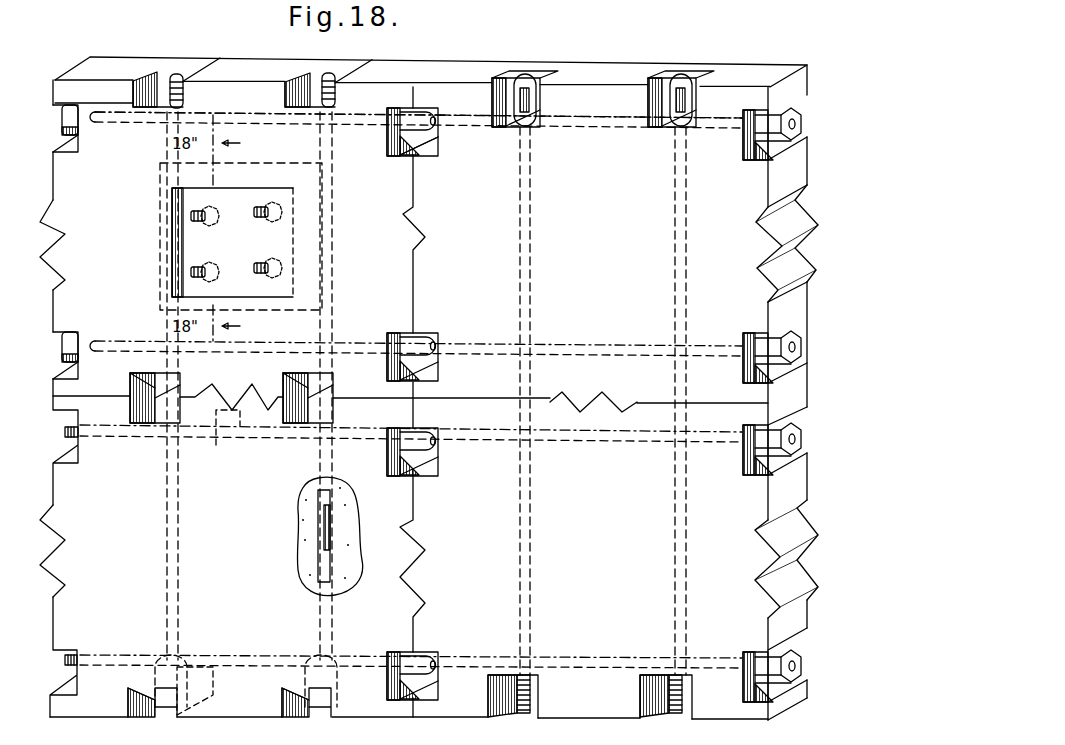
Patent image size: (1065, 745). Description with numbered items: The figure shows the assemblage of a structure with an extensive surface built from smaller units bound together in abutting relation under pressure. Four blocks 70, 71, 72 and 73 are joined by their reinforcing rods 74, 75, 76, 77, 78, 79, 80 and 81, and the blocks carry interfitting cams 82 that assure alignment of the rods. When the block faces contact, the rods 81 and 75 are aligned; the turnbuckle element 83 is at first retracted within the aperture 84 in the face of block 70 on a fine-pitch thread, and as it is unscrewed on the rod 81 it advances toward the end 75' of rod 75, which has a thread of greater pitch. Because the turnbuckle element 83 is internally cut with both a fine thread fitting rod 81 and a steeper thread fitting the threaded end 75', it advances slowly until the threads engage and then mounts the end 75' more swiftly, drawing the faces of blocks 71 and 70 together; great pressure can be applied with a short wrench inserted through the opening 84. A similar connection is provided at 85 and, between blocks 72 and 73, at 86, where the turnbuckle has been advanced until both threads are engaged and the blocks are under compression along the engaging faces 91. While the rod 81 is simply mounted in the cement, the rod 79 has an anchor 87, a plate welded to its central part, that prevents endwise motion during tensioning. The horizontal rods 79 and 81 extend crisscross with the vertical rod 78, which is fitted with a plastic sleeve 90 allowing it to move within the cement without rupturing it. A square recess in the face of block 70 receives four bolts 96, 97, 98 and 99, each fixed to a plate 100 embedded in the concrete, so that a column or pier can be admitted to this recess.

The block 70 is at (118, 192).
The block 71 is at (602, 272).
The block 72 is at (216, 532).
The block 73 is at (600, 516).
The reinforcing rod 74 is at (532, 220).
The reinforcing rod 75 is at (591, 143).
The screw threaded end of rod 75' is at (498, 99).
The reinforcing rod 76 is at (688, 106).
The reinforcing rod 77 is at (674, 712).
The vertical rod 78 is at (345, 522).
The horizontal rod 79 is at (140, 447).
The reinforcing rod 80 is at (112, 648).
The reinforcing rod 81 is at (214, 118).
The interfitting cam 82 is at (56, 222).
The turnbuckle element 83 is at (400, 123).
The aperture 84 is at (400, 156).
The connection 85 is at (392, 342).
The connection 86 is at (432, 464).
The anchor 87 is at (218, 447).
The plastic sleeve 90 is at (316, 504).
The engaging faces 91 is at (416, 492).
The bolt 96 is at (190, 276).
The bolt 97 is at (190, 220).
The bolt 98 is at (264, 204).
The bolt 99 is at (266, 282).
The plate 100 is at (322, 233).